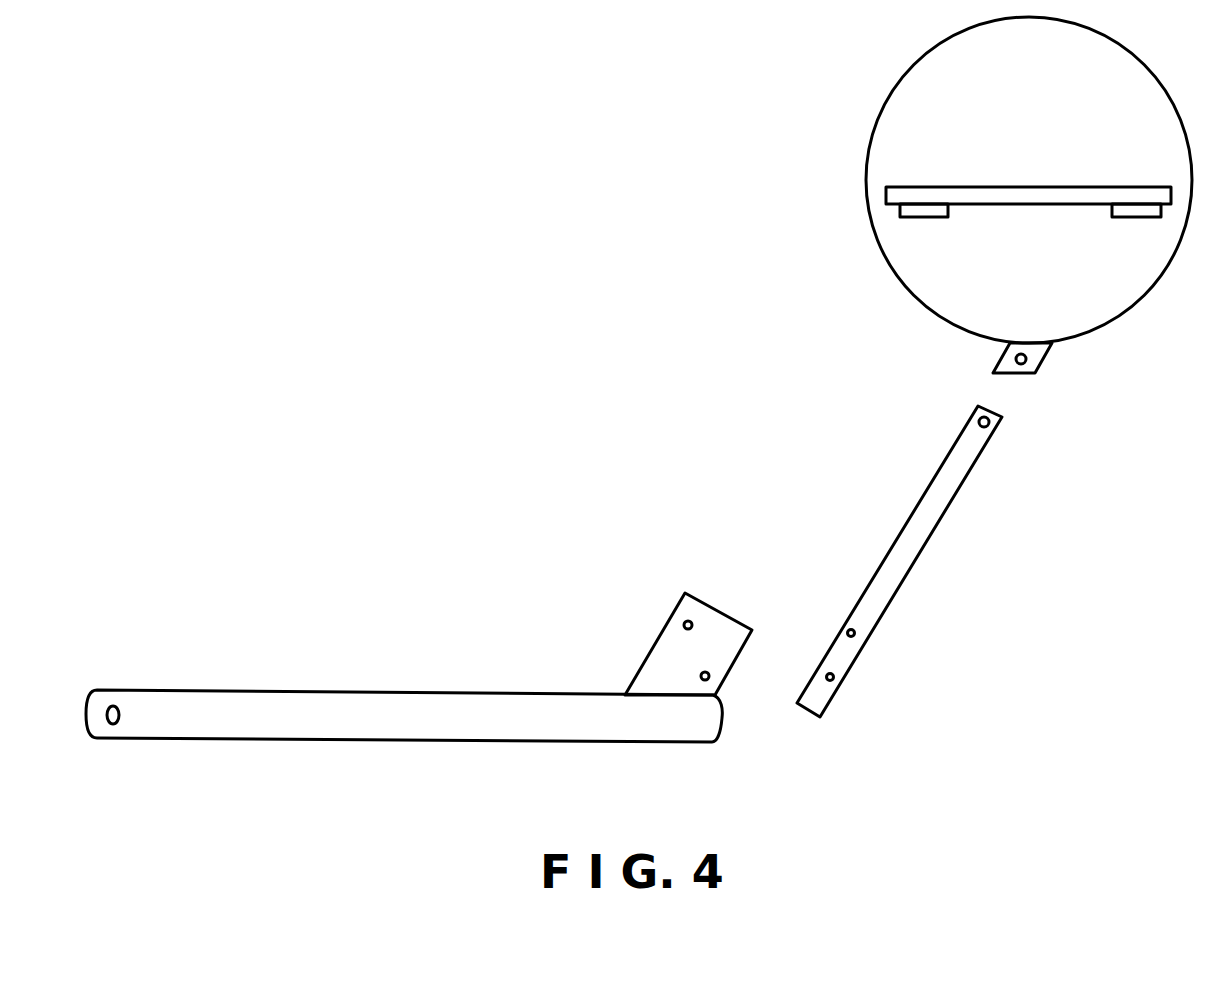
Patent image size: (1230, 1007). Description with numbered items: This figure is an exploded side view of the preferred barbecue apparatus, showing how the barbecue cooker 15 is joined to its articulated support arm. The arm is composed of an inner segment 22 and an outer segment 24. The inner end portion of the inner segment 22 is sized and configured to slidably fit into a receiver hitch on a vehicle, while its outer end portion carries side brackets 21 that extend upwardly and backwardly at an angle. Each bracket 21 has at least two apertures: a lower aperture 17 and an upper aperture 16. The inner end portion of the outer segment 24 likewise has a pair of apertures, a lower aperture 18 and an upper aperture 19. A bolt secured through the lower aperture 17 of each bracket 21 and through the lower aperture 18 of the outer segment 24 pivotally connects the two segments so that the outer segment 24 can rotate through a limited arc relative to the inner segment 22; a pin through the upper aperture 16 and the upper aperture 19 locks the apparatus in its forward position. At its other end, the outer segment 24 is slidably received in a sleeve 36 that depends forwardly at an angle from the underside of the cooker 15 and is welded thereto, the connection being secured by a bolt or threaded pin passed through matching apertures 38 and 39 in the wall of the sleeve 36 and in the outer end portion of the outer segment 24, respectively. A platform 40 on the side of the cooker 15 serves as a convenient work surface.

The barbecue cooker 15 is at (1145, 85).
The platform 40 is at (957, 184).
The sleeve 36 is at (1042, 360).
The aperture 38 is at (1010, 358).
The outer segment 24 is at (887, 560).
The aperture 39 is at (978, 421).
The upper aperture 19 is at (847, 624).
The lower aperture 18 is at (836, 677).
The side bracket 21 is at (662, 648).
The upper aperture 16 is at (684, 622).
The lower aperture 17 is at (710, 677).
The inner segment 22 is at (413, 723).